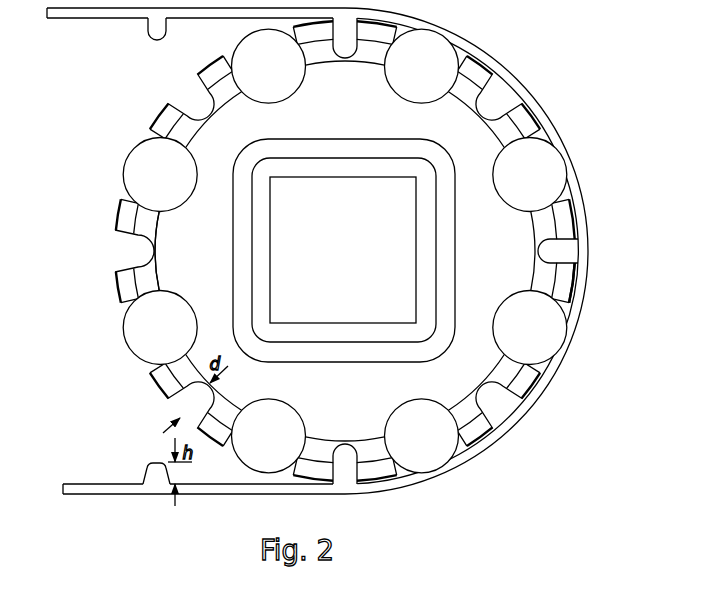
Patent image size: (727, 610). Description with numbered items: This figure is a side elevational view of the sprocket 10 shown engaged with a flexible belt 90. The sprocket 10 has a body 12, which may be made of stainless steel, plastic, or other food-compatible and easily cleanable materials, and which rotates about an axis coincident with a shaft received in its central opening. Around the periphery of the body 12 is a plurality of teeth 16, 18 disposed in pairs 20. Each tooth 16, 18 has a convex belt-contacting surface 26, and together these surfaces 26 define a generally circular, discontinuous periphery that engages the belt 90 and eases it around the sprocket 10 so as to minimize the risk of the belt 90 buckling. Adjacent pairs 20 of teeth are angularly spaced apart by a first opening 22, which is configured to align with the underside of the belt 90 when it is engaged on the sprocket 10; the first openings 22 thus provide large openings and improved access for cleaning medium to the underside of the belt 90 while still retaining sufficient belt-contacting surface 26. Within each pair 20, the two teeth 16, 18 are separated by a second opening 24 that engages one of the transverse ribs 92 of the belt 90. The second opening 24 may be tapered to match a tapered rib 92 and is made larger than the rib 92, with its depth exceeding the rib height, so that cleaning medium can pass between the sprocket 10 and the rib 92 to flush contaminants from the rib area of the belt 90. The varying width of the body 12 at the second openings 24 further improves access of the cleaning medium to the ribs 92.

The sprocket 10 is at (343, 265).
The body 12 is at (350, 402).
The tooth 16 is at (562, 207).
The tooth 18 is at (563, 287).
The pair of teeth 20 is at (118, 302).
The first opening 22 is at (152, 168).
The second opening 24 is at (186, 90).
The belt-contacting surface 26 is at (576, 278).
The belt 90 is at (535, 104).
The rib 92 is at (155, 472).